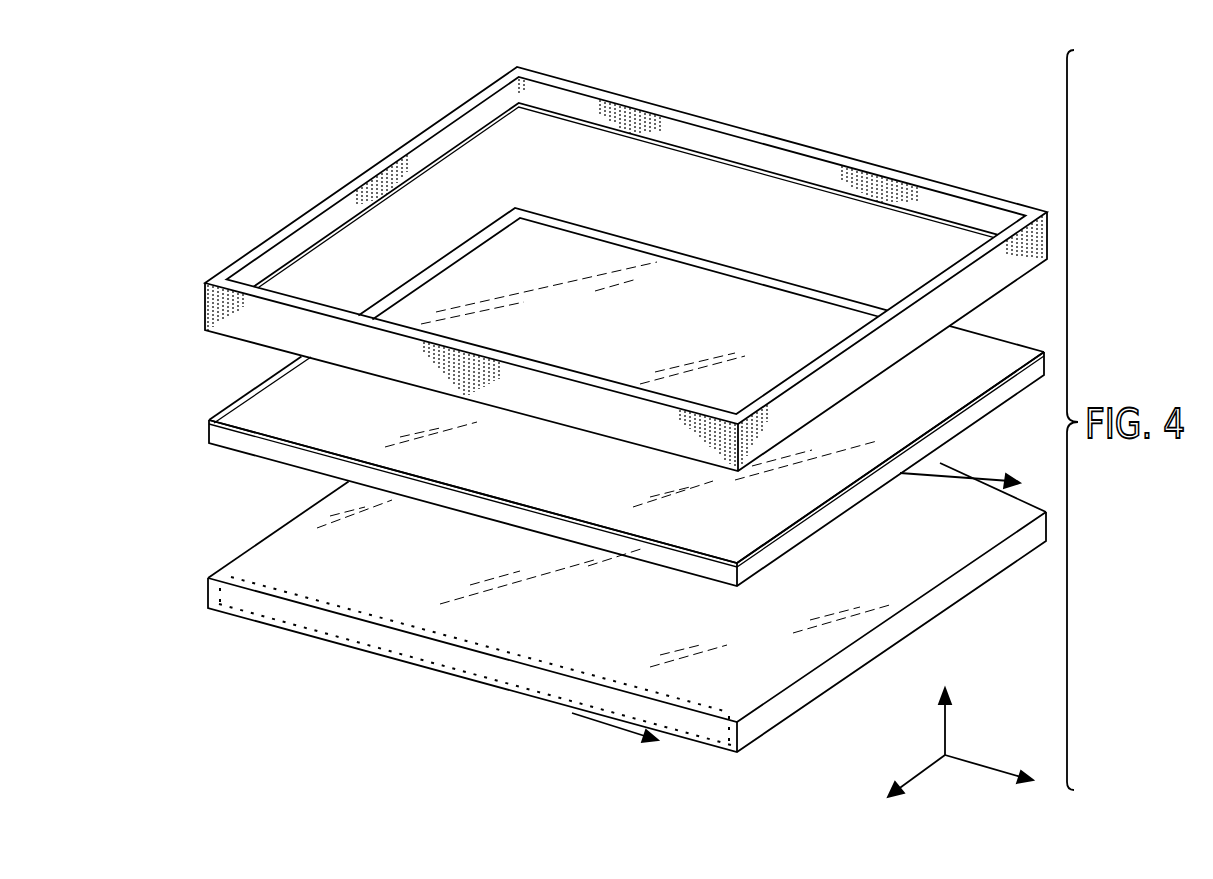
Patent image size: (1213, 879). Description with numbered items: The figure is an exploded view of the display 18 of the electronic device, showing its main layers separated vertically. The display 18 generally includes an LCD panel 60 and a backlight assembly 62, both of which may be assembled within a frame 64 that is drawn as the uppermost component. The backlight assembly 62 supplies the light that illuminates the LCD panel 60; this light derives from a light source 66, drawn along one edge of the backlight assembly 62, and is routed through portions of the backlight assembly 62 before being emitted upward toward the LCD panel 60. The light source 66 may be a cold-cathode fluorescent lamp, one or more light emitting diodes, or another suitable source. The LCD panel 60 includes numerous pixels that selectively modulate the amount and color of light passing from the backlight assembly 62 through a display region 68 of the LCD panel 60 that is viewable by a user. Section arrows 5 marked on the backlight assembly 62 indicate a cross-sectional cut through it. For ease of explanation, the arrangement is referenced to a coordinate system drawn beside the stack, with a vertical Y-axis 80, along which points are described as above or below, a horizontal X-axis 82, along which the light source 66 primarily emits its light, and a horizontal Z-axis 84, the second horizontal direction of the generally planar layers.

The display 18 is at (414, 68).
The frame 64 is at (818, 151).
The display region 68 is at (988, 351).
The LCD panel 60 is at (236, 453).
The backlight assembly 62 is at (970, 598).
The light source 66 is at (268, 630).
The section line 5- 5 is at (805, 619).
The Y-axis 80 is at (945, 724).
The X-axis 82 is at (906, 778).
The Z-axis 84 is at (996, 772).